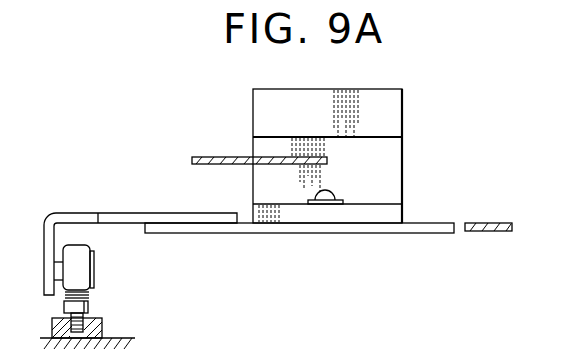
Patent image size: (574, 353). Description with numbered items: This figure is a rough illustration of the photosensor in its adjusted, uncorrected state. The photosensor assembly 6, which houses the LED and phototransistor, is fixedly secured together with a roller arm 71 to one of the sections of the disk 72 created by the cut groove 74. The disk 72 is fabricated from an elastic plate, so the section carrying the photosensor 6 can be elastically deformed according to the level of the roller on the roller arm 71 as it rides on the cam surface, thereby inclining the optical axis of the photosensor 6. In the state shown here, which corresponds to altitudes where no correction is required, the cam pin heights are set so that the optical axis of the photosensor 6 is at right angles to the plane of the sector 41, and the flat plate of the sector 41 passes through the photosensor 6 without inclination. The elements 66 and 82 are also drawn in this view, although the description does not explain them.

The photosensor assembly 6 is at (402, 96).
The sector 41 is at (207, 156).
The adjusting screw / cylinder 66 is at (92, 298).
The roller arm 71 is at (90, 214).
The disk 72 is at (268, 233).
The cut groove 74 is at (462, 222).
The support block 82 is at (102, 326).